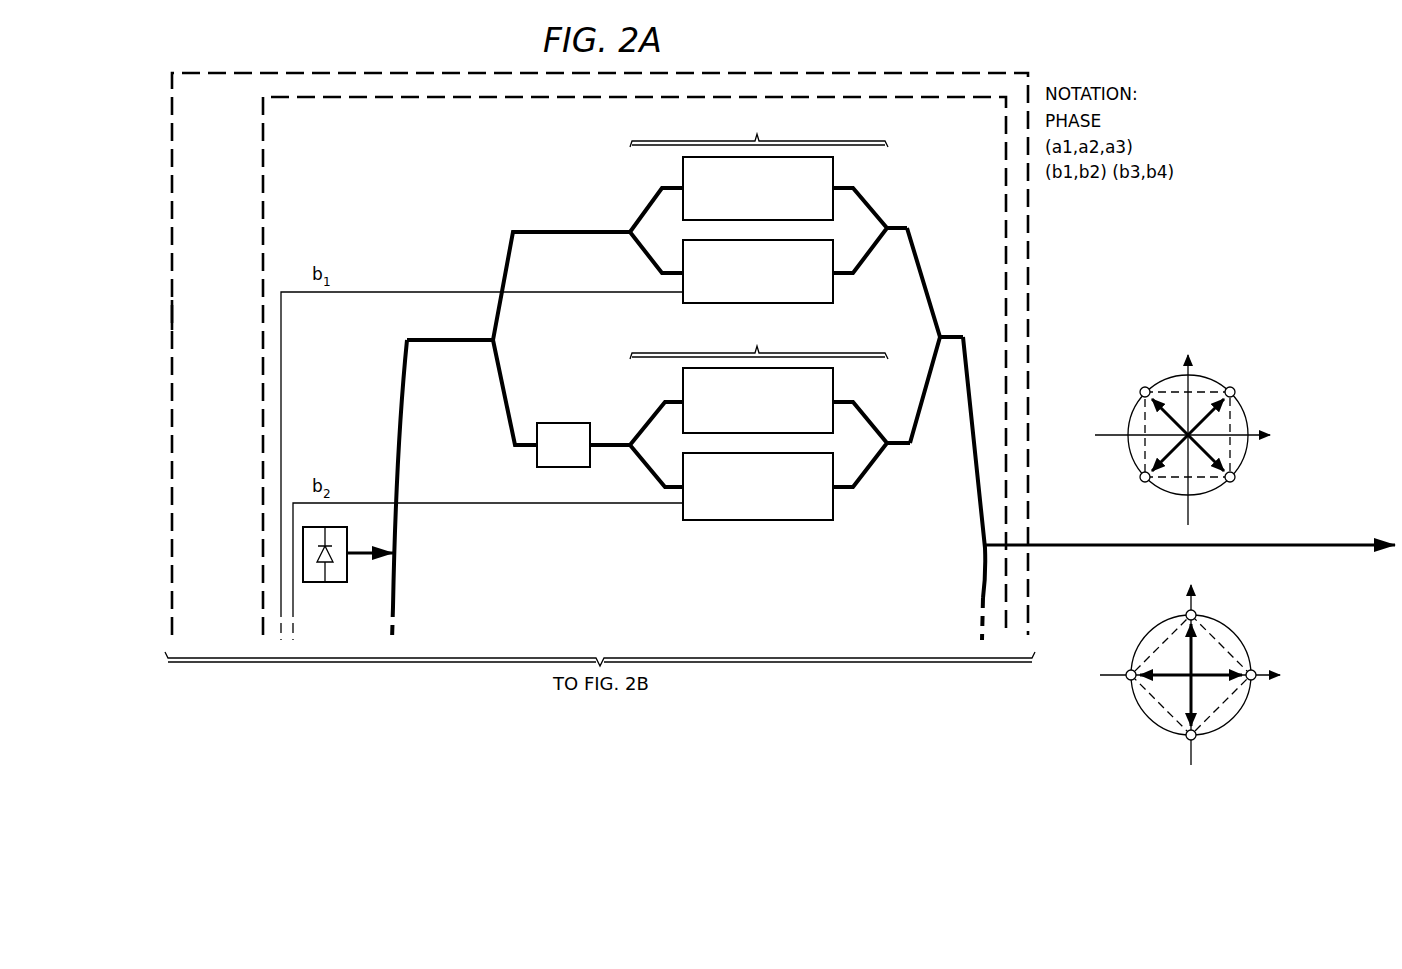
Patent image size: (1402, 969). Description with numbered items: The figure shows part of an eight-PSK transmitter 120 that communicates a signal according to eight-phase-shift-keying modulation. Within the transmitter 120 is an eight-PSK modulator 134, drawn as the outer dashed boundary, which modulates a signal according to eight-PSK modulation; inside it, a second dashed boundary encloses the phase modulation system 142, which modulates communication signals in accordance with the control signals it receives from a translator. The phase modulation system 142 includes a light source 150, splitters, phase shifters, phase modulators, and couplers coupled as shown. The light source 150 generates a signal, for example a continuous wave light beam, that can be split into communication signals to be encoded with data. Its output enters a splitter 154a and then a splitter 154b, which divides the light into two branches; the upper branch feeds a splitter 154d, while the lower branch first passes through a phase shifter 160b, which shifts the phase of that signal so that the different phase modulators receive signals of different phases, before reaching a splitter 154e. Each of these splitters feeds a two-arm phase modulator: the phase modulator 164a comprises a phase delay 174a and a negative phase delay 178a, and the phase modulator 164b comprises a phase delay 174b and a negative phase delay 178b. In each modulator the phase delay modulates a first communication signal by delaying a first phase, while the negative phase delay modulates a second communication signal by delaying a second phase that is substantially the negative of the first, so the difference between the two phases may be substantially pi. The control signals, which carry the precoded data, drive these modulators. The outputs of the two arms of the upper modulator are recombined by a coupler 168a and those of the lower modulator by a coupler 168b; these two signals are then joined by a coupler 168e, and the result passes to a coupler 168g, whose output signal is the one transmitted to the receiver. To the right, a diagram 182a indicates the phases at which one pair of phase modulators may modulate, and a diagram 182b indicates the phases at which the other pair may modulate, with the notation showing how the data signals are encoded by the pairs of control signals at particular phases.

The 8-PSK transmitter 120 is at (130, 215).
The 8-PSK modulator 134 is at (170, 318).
The phase modulation system 142 is at (260, 215).
The light source 150 is at (345, 582).
The splitter 154a is at (400, 550).
The splitter 154b is at (500, 342).
The splitter 154d is at (628, 229).
The splitter 154e is at (628, 441).
The phase shifter 160b is at (560, 422).
The phase modulator 164a is at (759, 128).
The phase modulator 164b is at (759, 340).
The coupler 168a is at (892, 222).
The coupler 168b is at (894, 450).
The coupler 168e is at (952, 334).
The coupler 168g is at (983, 548).
The phase delay 174a is at (838, 176).
The phase delay 174b is at (838, 390).
The negative phase delay 178a is at (838, 293).
The negative phase delay 178b is at (838, 509).
The diagram 182a is at (1276, 412).
The diagram 182b is at (1277, 716).